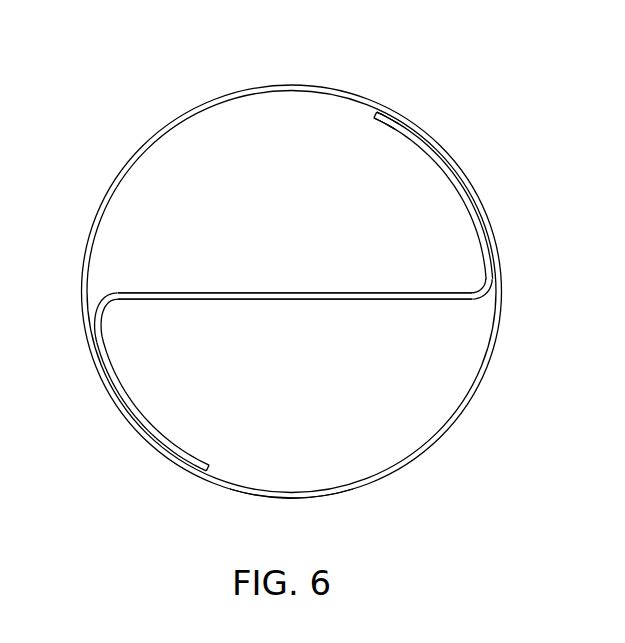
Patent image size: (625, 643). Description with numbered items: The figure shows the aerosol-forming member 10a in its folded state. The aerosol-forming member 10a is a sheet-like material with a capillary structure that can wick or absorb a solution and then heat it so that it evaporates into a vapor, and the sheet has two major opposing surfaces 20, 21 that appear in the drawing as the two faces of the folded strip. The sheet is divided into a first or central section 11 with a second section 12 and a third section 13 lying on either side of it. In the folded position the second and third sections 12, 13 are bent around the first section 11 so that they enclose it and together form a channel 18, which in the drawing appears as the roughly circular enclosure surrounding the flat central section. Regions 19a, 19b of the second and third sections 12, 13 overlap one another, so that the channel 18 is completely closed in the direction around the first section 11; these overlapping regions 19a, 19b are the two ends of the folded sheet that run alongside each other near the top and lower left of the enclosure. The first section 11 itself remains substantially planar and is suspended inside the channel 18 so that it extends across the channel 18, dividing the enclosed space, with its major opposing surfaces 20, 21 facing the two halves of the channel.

The aerosol-forming member 10a is at (366, 66).
The first or central section 11 is at (297, 300).
The second section 12 is at (289, 499).
The third section 13 is at (153, 133).
The channel 18 is at (117, 246).
The overlapping region of the second section 19a is at (463, 178).
The overlapping region of the third section 19b is at (115, 407).
The major opposing surface 20 is at (375, 300).
The major opposing surface 21 is at (320, 292).